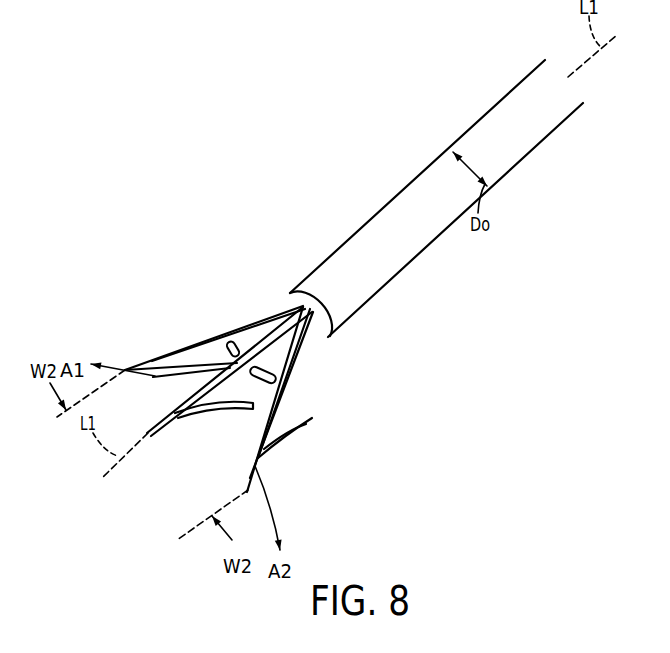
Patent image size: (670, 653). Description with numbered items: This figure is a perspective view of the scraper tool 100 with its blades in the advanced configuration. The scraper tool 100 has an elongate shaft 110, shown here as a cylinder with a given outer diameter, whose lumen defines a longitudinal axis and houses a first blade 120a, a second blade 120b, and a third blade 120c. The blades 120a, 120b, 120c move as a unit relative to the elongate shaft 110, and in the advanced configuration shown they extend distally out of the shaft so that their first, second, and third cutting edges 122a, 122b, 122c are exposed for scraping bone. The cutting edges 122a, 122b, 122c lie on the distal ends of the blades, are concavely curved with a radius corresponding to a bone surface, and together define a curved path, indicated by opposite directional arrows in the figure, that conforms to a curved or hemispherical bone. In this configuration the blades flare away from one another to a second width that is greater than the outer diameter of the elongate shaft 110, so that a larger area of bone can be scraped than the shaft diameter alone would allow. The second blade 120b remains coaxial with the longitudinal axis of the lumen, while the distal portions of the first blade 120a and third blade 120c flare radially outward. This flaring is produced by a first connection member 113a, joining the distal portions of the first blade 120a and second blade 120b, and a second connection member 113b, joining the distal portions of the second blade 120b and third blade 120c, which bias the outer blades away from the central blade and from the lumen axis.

The scraper tool 100 is at (424, 124).
The elongate shaft 110 is at (483, 131).
The first connection member 113a is at (230, 339).
The second connection member 113b is at (275, 364).
The first blade 120a is at (200, 362).
The second blade 120b is at (199, 408).
The third blade 120c is at (307, 362).
The first cutting edge 122a is at (140, 373).
The second cutting edge 122b is at (172, 434).
The third cutting edge 122c is at (290, 442).